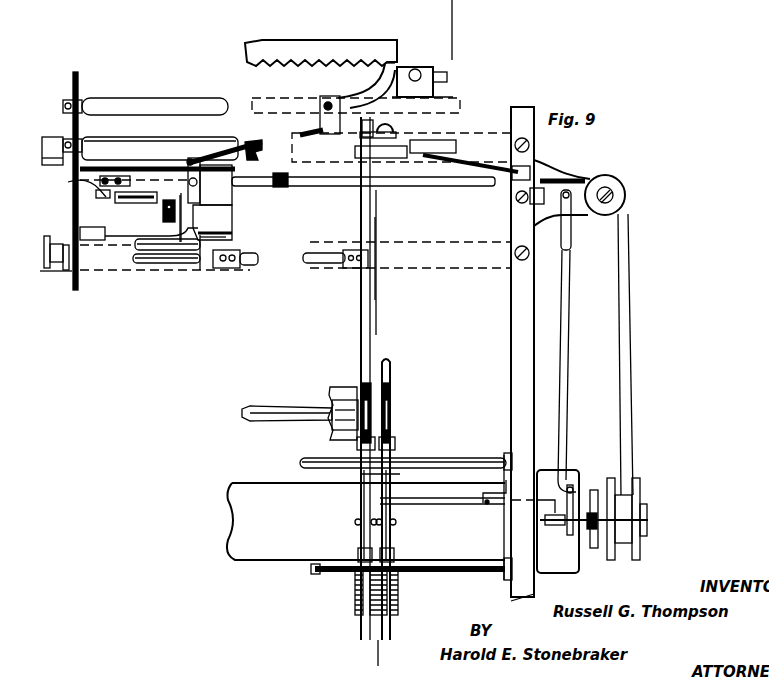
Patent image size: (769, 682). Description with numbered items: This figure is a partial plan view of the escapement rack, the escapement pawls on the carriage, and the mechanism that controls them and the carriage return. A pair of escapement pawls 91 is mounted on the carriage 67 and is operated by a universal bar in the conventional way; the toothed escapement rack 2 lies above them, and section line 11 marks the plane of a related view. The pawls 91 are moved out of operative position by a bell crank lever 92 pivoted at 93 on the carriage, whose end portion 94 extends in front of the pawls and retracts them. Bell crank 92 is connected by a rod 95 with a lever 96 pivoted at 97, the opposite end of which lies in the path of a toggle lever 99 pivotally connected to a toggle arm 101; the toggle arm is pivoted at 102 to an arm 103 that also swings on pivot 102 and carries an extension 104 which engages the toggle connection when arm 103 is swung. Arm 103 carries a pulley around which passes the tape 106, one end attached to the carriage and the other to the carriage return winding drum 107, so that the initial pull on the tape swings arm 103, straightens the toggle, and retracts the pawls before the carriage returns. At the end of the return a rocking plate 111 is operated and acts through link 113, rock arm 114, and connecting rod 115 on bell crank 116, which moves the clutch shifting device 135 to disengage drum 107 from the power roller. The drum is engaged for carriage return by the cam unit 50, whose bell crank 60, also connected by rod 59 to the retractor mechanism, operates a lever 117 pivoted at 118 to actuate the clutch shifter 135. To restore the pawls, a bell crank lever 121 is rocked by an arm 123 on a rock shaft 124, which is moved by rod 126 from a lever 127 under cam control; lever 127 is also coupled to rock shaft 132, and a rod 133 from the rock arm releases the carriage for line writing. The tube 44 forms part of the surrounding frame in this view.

The toothed blade 2 is at (280, 61).
The section line 11 is at (456, 31).
The tube 44 is at (255, 558).
The cam unit 50 is at (399, 588).
The rod 59 is at (389, 377).
The bell crank 60 is at (387, 491).
The carriage 67 is at (78, 91).
The escapement pawls 91 is at (388, 62).
The bell crank lever 92 is at (352, 98).
The pivot 93 is at (323, 102).
The end portion 94 is at (393, 72).
The rod 95 is at (253, 153).
The lever 96 is at (186, 163).
The pivot 97 is at (201, 178).
The toggle lever 99 is at (188, 206).
The toggle arm 101 is at (137, 199).
The pivot 102 is at (74, 186).
The arm 103 is at (100, 198).
The extension 104 is at (165, 195).
The tape 106 is at (623, 362).
The carriage return winding drum 107 is at (640, 503).
The rocking plate 111 is at (405, 143).
The link 113 is at (487, 151).
The rock arm 114 is at (520, 179).
The connecting rod 115 is at (567, 327).
The bell crank 116 is at (565, 528).
The lever 117 is at (430, 503).
The pivot 118 is at (488, 505).
The bell crank lever 121 is at (234, 226).
The arm 123 is at (135, 248).
The rock shaft 124 is at (173, 262).
The rod 126 is at (361, 328).
The lever 127 is at (364, 494).
The rock shaft 132 is at (268, 412).
The rod 133 is at (368, 198).
The clutch shifting device 135 is at (580, 558).